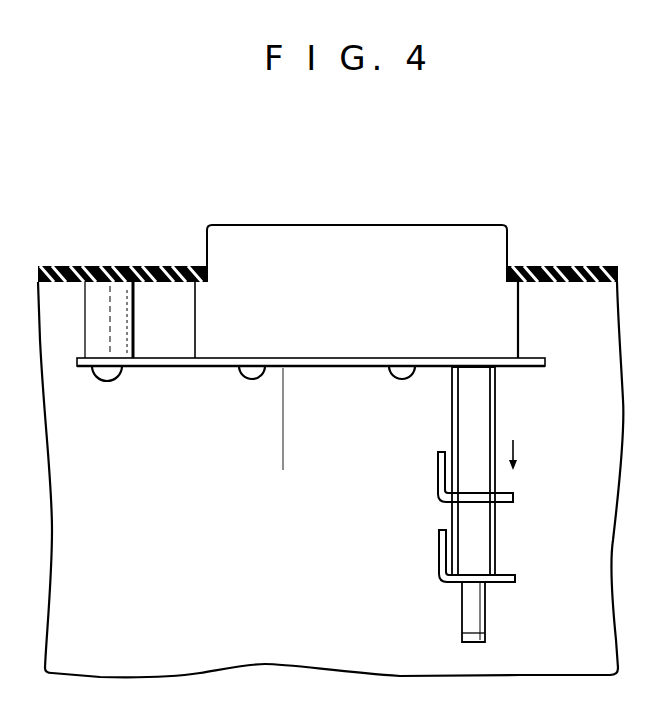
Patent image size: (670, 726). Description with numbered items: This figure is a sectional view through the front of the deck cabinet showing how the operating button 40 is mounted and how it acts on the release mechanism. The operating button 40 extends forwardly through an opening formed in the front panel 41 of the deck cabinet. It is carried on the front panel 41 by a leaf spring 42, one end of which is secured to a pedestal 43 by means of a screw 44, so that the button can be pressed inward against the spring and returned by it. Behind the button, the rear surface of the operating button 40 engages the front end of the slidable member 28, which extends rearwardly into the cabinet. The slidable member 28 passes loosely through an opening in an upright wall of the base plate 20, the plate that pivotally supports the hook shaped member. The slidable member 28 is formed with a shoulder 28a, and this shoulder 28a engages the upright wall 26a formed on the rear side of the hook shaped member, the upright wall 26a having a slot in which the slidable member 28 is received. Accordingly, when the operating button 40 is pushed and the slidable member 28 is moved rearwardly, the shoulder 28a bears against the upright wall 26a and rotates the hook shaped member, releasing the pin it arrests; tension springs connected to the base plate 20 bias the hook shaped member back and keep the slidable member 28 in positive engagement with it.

The operating button 40 is at (412, 235).
The front panel 41 is at (133, 266).
The leaf spring 42 is at (163, 367).
The pedestal 43 is at (134, 320).
The screw 44 is at (121, 378).
The slidable member 28 is at (496, 416).
The base plate 20 is at (514, 497).
The shoulder 28a is at (486, 566).
The upright wall 26a is at (516, 580).